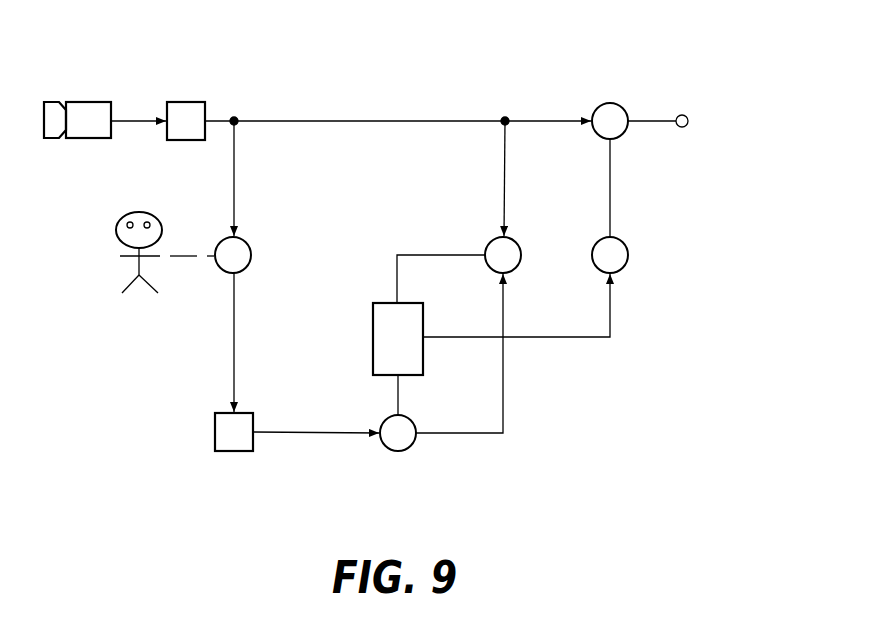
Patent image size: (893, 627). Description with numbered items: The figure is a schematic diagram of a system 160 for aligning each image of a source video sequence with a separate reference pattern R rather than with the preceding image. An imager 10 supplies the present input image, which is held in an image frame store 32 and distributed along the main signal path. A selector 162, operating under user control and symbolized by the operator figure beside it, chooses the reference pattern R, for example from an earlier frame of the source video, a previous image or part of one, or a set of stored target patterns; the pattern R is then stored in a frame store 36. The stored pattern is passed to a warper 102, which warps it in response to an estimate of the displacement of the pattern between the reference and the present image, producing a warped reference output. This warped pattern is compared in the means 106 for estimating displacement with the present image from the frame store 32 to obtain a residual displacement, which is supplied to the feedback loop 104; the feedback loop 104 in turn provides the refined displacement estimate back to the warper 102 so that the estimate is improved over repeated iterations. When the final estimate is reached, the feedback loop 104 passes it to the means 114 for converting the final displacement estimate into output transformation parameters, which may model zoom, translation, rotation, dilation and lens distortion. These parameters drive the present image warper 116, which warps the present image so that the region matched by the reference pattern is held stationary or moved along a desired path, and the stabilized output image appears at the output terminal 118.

The imager 10 is at (74, 102).
The image frame store 32 is at (188, 102).
The system for aligning each image with a separate reference pattern 160 is at (390, 101).
The present image warper 116 is at (612, 103).
The output terminal 118 is at (688, 122).
The selector 162 is at (247, 243).
The frame store 36 is at (215, 437).
The warper 102 is at (398, 451).
The feedback loop 104 is at (373, 327).
The means for estimating displacement 106 is at (488, 243).
The means for converting the final estimate of the displacement to output transforma 114 is at (628, 257).